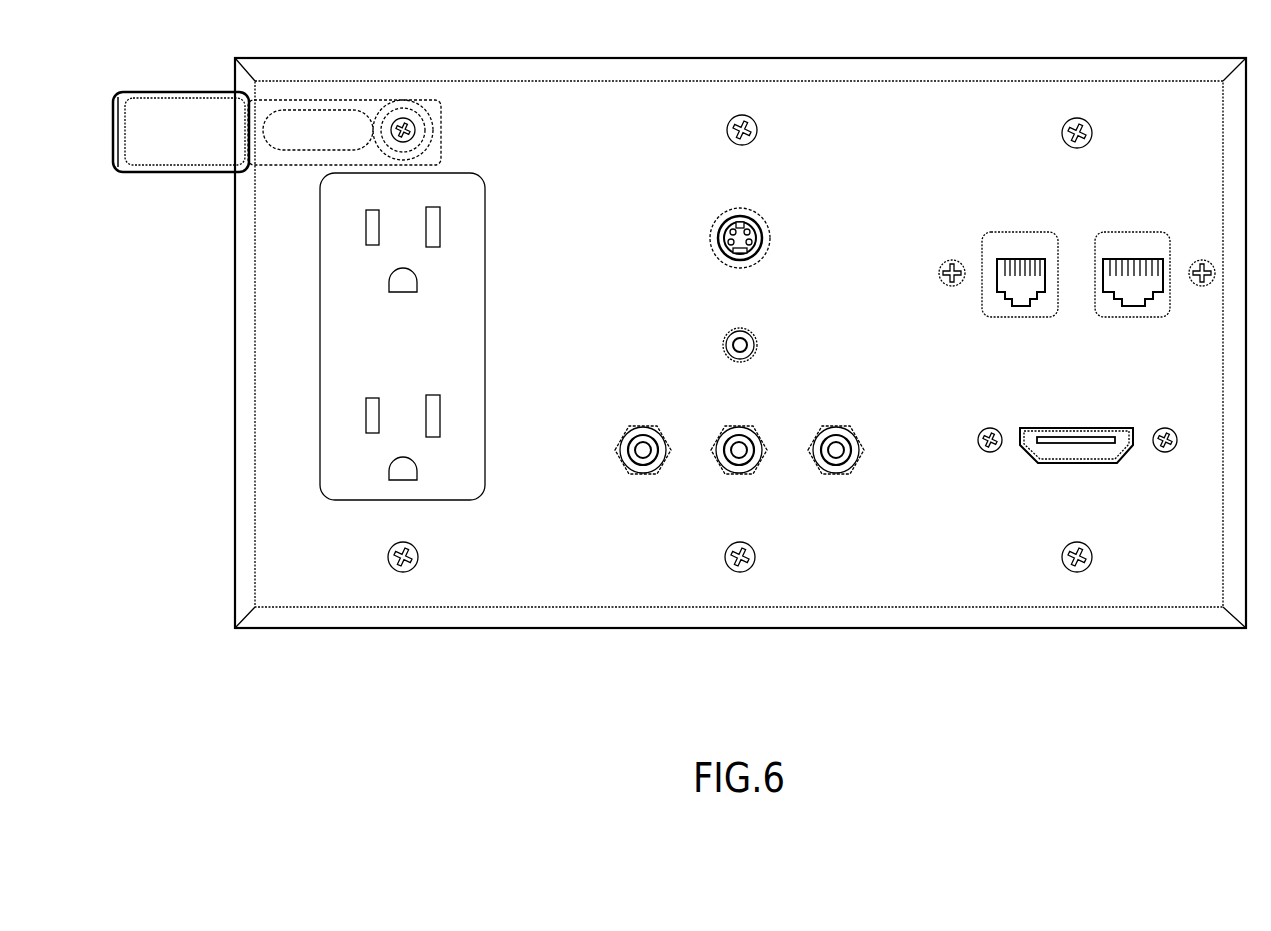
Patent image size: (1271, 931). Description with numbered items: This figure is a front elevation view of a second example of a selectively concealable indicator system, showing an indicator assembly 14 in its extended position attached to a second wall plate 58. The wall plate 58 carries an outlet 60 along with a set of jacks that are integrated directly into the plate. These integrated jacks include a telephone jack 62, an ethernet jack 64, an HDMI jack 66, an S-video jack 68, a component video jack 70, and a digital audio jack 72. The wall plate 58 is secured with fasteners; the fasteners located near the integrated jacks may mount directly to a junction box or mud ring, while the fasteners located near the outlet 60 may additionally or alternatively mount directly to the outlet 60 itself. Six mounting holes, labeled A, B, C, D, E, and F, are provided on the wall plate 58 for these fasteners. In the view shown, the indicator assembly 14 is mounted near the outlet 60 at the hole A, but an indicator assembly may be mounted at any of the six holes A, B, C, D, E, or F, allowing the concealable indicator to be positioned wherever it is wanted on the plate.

The indicator assembly 14 is at (170, 62).
The second wall plate 58 is at (283, 577).
The outlet 60 is at (478, 339).
The telephone jack 62 is at (1020, 232).
The ethernet jack 64 is at (1135, 232).
The HDMI jack 66 is at (1078, 428).
The S-video jack 68 is at (771, 238).
The component video jack 70 is at (643, 477).
The digital audio jack 72 is at (757, 345).
The hole A is at (412, 121).
The hole B is at (750, 118).
The hole C is at (1086, 120).
The hole D is at (1086, 544).
The hole E is at (749, 544).
The hole F is at (412, 544).